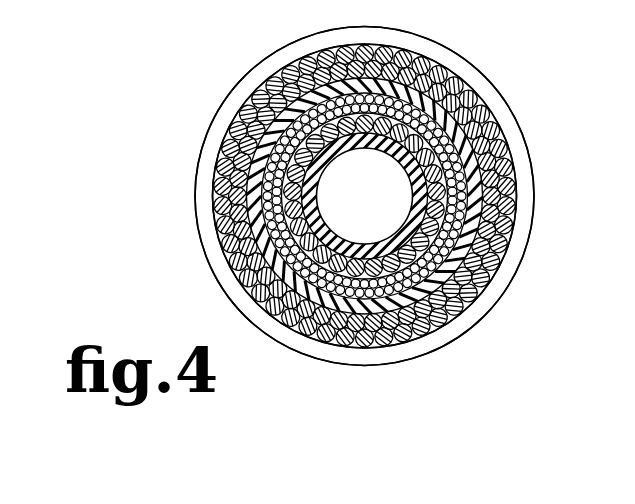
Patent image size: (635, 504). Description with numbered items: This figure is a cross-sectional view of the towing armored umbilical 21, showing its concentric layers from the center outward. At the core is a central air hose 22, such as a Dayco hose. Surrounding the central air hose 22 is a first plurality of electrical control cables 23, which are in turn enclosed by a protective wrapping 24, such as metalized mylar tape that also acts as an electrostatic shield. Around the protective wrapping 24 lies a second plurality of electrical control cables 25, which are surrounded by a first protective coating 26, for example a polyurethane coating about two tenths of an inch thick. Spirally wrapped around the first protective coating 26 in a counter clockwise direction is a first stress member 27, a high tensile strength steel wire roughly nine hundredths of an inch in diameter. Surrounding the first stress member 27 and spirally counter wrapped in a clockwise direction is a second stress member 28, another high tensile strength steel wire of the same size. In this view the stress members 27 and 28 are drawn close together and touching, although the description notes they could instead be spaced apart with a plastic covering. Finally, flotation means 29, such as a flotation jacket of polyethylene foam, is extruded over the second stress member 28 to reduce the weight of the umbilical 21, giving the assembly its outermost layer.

The towing armored umbilical 21 is at (460, 346).
The central air hose 22 is at (257, 103).
The first plurality of electrical control cables 23 is at (257, 148).
The protective wrapping 24 is at (267, 207).
The second plurality of electrical control cables 25 is at (252, 257).
The first protective coating 26 is at (483, 102).
The first stress member 27 is at (507, 143).
The second stress member 28 is at (512, 212).
The flotation means 29 is at (488, 287).